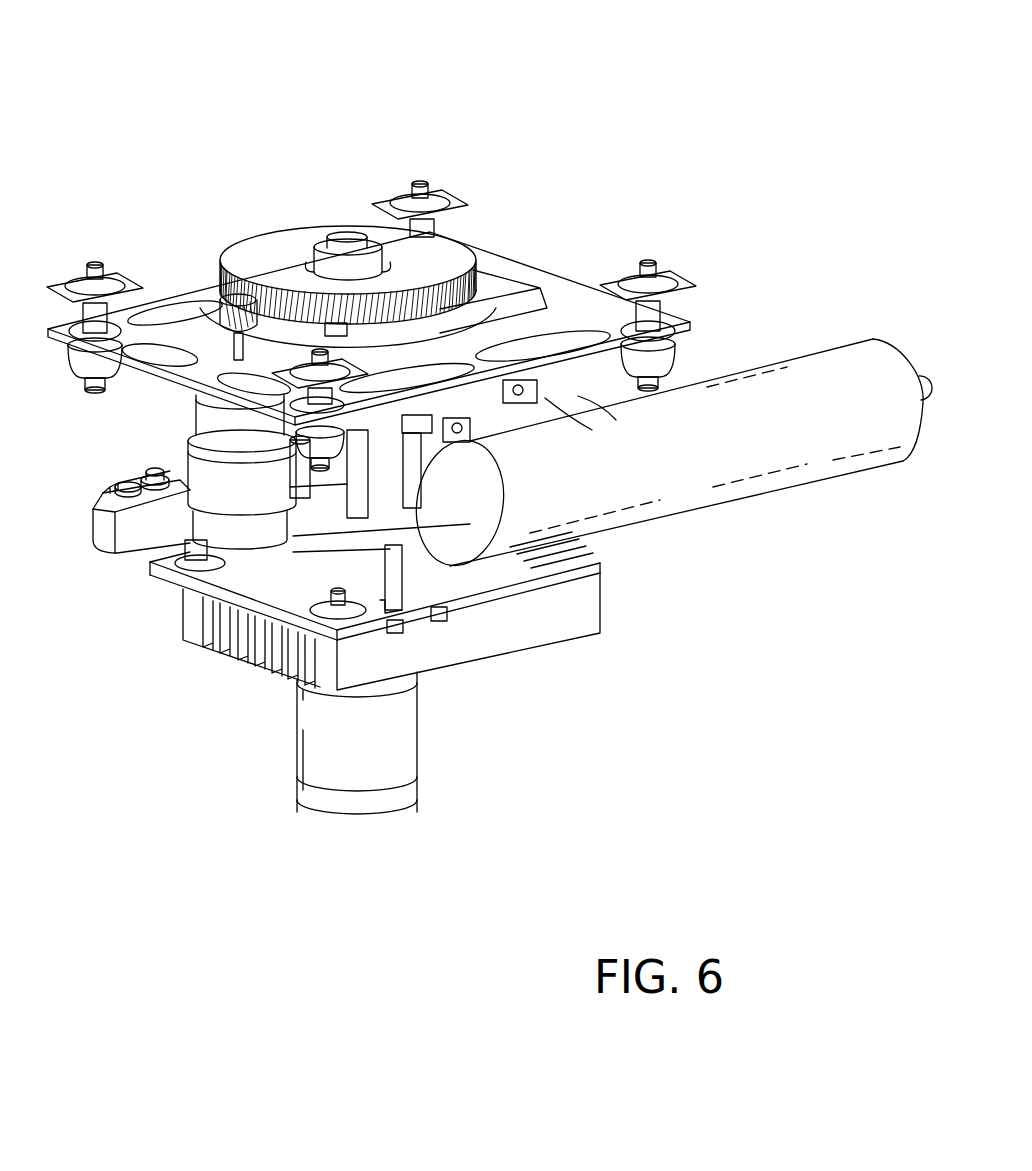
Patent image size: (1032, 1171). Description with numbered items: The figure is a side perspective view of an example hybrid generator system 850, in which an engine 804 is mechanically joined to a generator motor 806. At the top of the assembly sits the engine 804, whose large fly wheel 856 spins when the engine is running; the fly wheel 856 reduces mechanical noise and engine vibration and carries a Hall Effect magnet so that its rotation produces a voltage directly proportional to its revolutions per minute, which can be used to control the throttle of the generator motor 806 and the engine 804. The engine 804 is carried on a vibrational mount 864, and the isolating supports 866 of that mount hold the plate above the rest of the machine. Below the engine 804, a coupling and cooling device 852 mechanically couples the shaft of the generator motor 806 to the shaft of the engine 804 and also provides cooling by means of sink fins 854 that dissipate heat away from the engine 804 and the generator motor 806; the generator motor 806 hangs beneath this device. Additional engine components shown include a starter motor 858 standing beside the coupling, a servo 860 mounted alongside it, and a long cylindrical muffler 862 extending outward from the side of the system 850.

The hybrid generator system 850 is at (217, 60).
The engine 804 is at (355, 179).
The vibration isolator mounts 866 is at (181, 246).
The vibrational mount 864 is at (550, 282).
The starter motor 858 is at (190, 453).
The servo 860 is at (103, 538).
The muffler 862 is at (755, 470).
The fly wheel 856 is at (283, 573).
The sink fins 854 is at (255, 642).
The coupling and cooling device 852 is at (552, 627).
The generator motor 806 is at (417, 747).